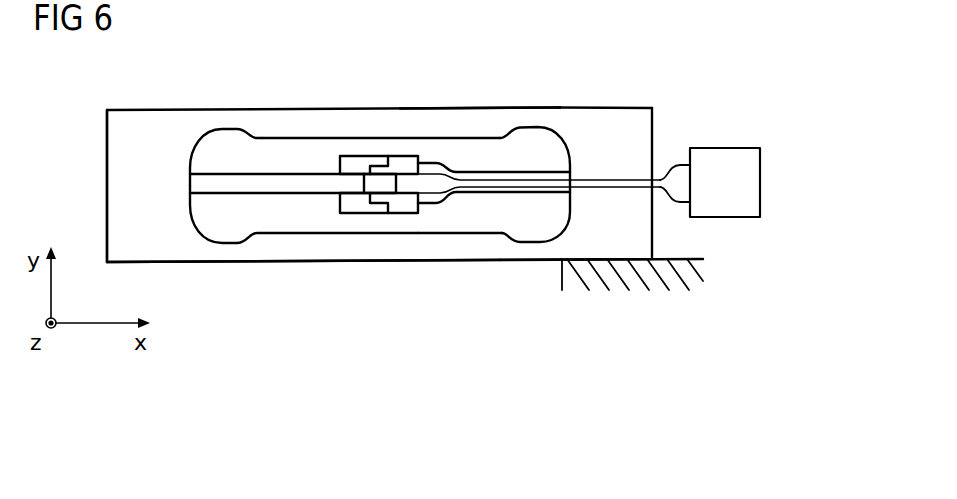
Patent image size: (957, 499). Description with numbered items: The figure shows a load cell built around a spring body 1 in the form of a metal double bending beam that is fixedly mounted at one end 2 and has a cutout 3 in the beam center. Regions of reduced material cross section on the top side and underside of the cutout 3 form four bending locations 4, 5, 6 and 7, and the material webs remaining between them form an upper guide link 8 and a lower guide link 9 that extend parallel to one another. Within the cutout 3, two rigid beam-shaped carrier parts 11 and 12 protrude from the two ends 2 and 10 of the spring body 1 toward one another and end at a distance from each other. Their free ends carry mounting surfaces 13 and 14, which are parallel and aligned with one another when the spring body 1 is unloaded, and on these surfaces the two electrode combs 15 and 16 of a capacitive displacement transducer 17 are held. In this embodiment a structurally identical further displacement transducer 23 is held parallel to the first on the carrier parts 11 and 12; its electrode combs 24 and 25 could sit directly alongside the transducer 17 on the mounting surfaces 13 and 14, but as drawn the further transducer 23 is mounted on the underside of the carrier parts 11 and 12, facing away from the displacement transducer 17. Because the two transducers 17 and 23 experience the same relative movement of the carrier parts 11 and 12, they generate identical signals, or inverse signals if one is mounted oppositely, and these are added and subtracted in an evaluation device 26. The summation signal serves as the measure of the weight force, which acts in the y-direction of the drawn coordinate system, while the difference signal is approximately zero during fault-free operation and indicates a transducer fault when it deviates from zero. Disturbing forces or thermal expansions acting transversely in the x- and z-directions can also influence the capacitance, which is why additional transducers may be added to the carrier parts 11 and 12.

The spring body 1 is at (620, 68).
The end 2 is at (652, 127).
The cutout 3 is at (266, 218).
The bending location 4 is at (527, 116).
The bending location 5 is at (232, 128).
The bending location 6 is at (529, 252).
The bending location 7 is at (232, 253).
The upper guide link 8 is at (472, 116).
The lower guide link 9 is at (447, 250).
The end 10 is at (107, 187).
The carrier part 11 is at (303, 186).
The carrier part 12 is at (480, 191).
The mounting surface 13 is at (336, 157).
The mounting surface 14 is at (426, 157).
The electrode comb 15 is at (359, 165).
The electrode comb 16 is at (401, 165).
The capacitive displacement transducer 17 is at (378, 136).
The further displacement transducer 23 is at (380, 236).
The electrode comb 24 is at (360, 203).
The electrode comb 25 is at (401, 203).
The evaluation device 26 is at (727, 148).